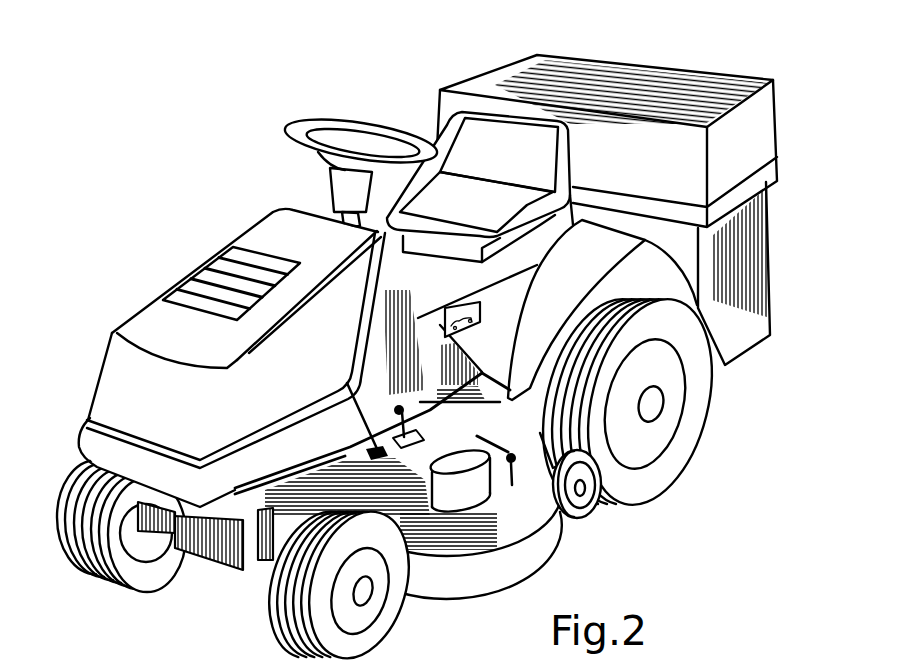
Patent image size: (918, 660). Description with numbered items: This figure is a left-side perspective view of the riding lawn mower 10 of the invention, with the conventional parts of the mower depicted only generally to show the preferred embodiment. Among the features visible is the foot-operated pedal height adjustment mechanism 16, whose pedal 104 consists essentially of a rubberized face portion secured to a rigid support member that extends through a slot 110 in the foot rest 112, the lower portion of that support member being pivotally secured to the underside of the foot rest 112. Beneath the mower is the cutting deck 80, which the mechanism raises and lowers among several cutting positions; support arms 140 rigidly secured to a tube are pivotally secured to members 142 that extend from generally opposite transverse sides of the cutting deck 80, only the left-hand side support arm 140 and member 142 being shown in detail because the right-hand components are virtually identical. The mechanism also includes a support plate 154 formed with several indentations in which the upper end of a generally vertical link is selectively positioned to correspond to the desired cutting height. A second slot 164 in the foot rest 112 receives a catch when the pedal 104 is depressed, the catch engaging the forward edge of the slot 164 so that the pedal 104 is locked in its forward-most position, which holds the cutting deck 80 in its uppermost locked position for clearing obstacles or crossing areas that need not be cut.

The riding lawn mower 10 is at (200, 155).
The foot-operated pedal height adjustment mechanism 16 is at (392, 400).
The cutting deck 80 is at (567, 547).
The pedal 104 is at (392, 404).
The slot 110 is at (354, 386).
The foot rest 112 is at (447, 440).
The support arm 140 is at (503, 392).
The member 142 is at (510, 470).
The support plate 154 is at (482, 315).
The slot 164 is at (350, 438).